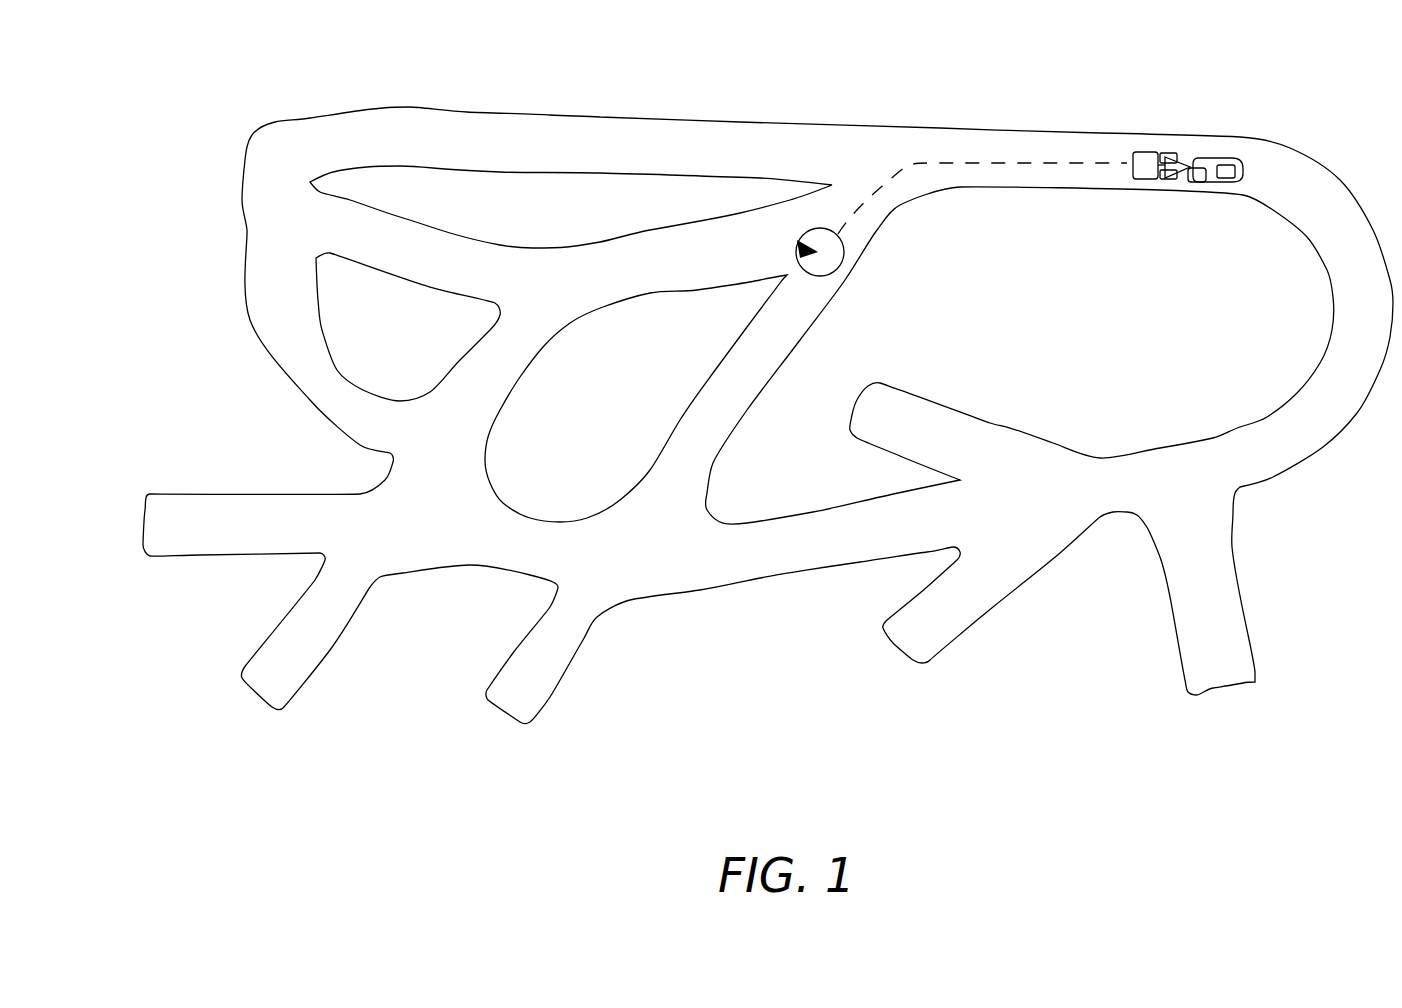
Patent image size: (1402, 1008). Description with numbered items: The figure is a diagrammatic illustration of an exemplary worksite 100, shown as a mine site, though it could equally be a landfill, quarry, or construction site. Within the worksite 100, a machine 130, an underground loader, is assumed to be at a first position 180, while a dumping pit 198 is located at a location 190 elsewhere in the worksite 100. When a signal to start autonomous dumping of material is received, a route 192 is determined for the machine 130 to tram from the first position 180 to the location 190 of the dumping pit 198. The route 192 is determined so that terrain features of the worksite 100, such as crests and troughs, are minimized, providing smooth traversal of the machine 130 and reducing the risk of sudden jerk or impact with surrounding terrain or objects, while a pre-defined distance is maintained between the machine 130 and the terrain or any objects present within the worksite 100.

The worksite 100 is at (247, 77).
The machine 130 is at (1193, 147).
The first position 180 is at (1187, 165).
The location of the dumping pit 190 is at (823, 228).
The route 192 is at (1048, 161).
The dumping pit 198 is at (800, 245).